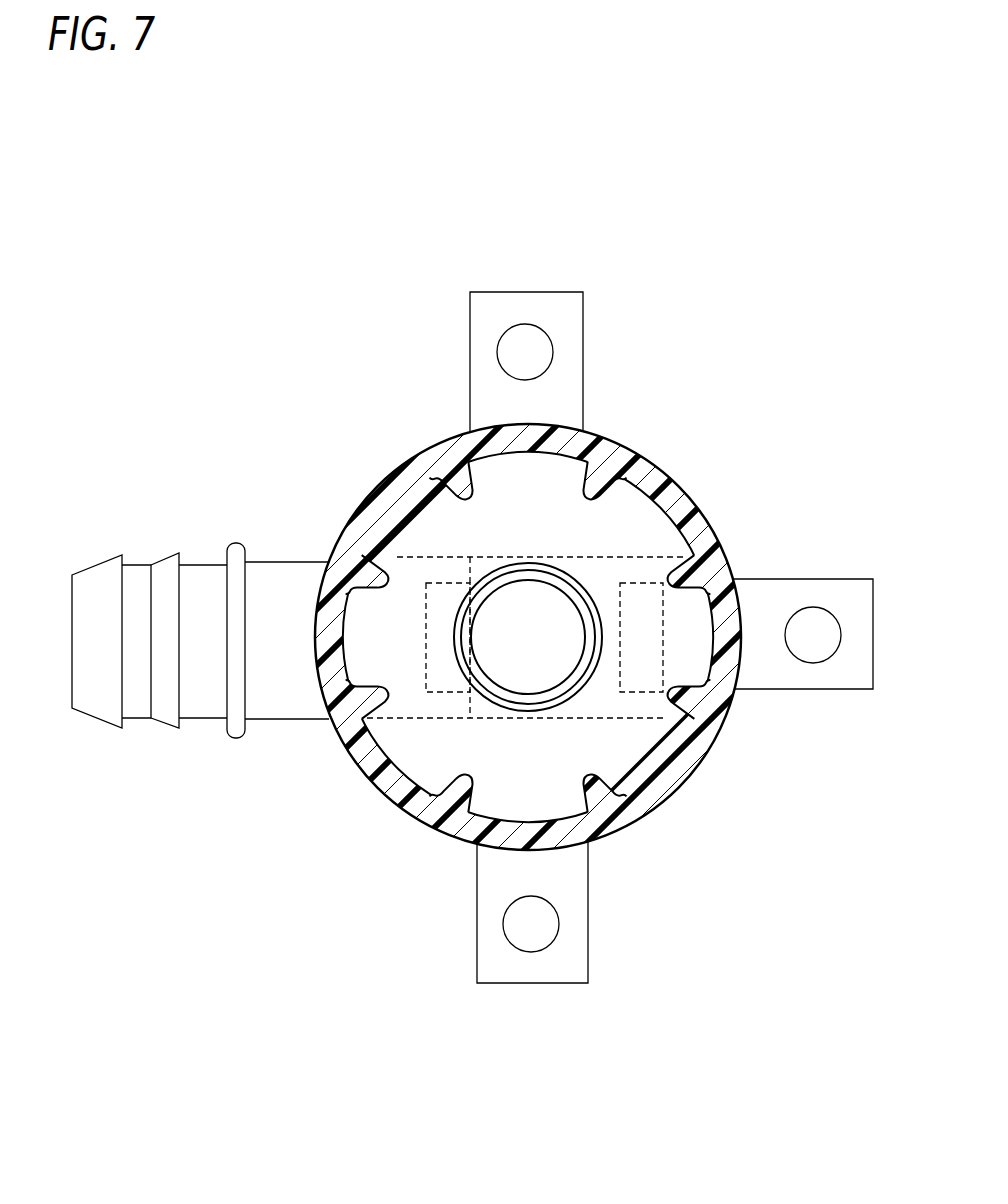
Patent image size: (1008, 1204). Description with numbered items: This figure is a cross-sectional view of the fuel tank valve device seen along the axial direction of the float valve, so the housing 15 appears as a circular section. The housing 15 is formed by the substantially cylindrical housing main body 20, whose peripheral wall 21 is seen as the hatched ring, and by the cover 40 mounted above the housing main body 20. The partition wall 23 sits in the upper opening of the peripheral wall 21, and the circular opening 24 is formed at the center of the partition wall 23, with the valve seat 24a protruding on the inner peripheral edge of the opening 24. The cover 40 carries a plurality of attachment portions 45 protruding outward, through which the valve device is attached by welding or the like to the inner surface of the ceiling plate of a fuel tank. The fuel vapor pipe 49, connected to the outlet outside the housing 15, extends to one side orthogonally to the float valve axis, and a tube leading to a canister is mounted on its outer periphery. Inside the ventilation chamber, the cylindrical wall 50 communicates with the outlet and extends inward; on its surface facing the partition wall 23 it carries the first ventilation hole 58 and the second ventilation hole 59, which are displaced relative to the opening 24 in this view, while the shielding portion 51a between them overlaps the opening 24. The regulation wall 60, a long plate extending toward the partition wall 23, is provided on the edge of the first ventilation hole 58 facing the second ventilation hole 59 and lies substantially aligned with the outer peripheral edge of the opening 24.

The housing 15 is at (504, 627).
The housing main body 20 is at (504, 665).
The peripheral wall 21 is at (365, 775).
The partition wall 23 is at (653, 533).
The opening 24 is at (571, 600).
The valve seat 24a is at (522, 578).
The cover 40 is at (200, 641).
The attachment portion 45 is at (528, 302).
The fuel vapor pipe 49 is at (202, 692).
The cylindrical wall 50 is at (633, 557).
The shielding portion 51a is at (552, 655).
The first ventilation hole 58 is at (443, 582).
The second ventilation hole 59 is at (652, 693).
The regulation wall 60 is at (473, 557).